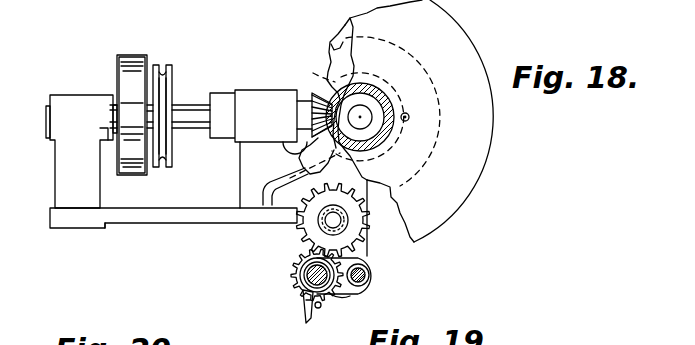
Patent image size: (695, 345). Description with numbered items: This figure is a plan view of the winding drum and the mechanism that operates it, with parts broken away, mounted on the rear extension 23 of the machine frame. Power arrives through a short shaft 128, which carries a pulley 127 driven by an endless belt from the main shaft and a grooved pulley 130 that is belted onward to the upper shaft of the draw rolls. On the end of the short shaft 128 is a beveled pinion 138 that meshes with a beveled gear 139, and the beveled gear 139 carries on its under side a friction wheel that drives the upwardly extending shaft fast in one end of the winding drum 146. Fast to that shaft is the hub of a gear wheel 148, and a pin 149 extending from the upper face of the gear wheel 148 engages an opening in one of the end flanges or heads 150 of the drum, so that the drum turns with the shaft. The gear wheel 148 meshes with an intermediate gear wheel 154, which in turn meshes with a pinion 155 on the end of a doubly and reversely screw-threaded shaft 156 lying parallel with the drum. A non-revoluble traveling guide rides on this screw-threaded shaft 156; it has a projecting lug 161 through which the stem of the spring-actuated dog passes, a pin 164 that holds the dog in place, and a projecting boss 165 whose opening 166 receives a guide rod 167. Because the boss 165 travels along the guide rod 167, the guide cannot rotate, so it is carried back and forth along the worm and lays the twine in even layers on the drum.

The rear extension 23 is at (87, 224).
The pulley 127 is at (137, 175).
The short shaft 128 is at (196, 122).
The grooved pulley 130 is at (172, 70).
The beveled pinion 138 is at (317, 95).
The beveled gear 139 is at (326, 80).
The winding drum 146 is at (388, 88).
The gear wheel 148 is at (351, 50).
The pin 149 is at (409, 120).
The end flange or head 150 is at (492, 127).
The intermediate gear wheel 154 is at (367, 240).
The pinion 155 is at (292, 270).
The doubly and reversely screw-threaded shaft 156 is at (303, 293).
The projecting lug 161 is at (310, 297).
The pin 164 is at (315, 313).
The projecting boss 165 is at (352, 292).
The opening 166 is at (365, 282).
The guide rod 167 is at (368, 273).